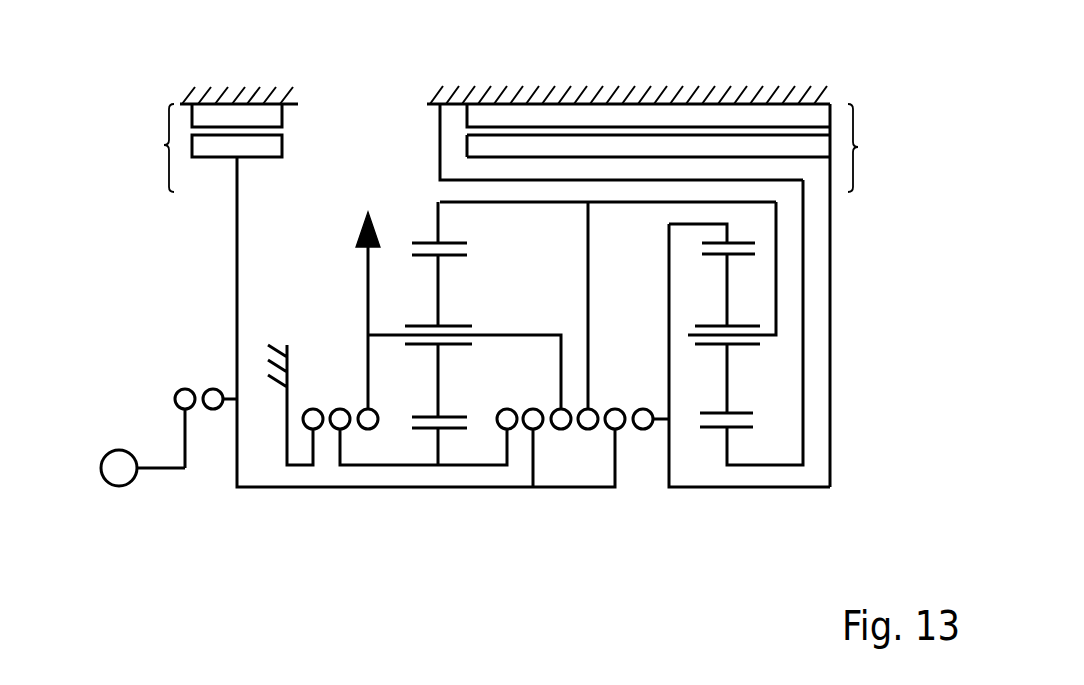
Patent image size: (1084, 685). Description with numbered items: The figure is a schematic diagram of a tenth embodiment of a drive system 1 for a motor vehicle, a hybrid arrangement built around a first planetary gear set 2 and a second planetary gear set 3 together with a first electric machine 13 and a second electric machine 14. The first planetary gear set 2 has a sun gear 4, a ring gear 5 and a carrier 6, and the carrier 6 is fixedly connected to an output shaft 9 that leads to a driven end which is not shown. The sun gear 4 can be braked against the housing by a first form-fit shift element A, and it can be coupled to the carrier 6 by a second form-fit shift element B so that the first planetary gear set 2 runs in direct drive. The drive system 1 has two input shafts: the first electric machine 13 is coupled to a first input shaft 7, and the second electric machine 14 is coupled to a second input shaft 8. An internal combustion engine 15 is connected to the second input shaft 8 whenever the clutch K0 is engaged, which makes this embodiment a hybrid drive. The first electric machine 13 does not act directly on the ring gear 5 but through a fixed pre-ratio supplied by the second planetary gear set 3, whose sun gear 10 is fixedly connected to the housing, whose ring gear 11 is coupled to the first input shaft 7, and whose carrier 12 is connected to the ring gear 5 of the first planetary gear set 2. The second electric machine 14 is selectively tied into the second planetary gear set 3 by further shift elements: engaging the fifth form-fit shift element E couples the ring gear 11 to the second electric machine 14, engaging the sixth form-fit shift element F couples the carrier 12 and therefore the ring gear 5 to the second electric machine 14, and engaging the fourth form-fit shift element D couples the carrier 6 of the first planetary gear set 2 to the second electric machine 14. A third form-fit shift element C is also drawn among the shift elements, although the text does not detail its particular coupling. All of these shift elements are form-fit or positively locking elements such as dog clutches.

The drive system 1 is at (119, 509).
The first planetary gear set 2 is at (437, 498).
The second planetary gear set 3 is at (727, 498).
The sun gear 4 is at (415, 467).
The ring gear 5 is at (438, 228).
The carrier 6 is at (393, 326).
The first input shaft 7 is at (832, 297).
The second input shaft 8 is at (237, 273).
The output shaft 9 is at (368, 299).
The sun gear 10 is at (730, 442).
The ring gear 11 is at (708, 224).
The carrier 12 is at (763, 337).
The first electric machine 13 is at (858, 147).
The second electric machine 14 is at (162, 145).
The internal combustion engine 15 is at (120, 450).
The clutch K0 is at (201, 417).
The first form-fit shift element A is at (327, 436).
The second form-fit shift element B is at (356, 436).
The third form-fit shift element C is at (517, 436).
The fourth form-fit shift element D is at (548, 436).
The fifth form-fit shift element E is at (630, 436).
The sixth form-fit shift element F is at (601, 436).